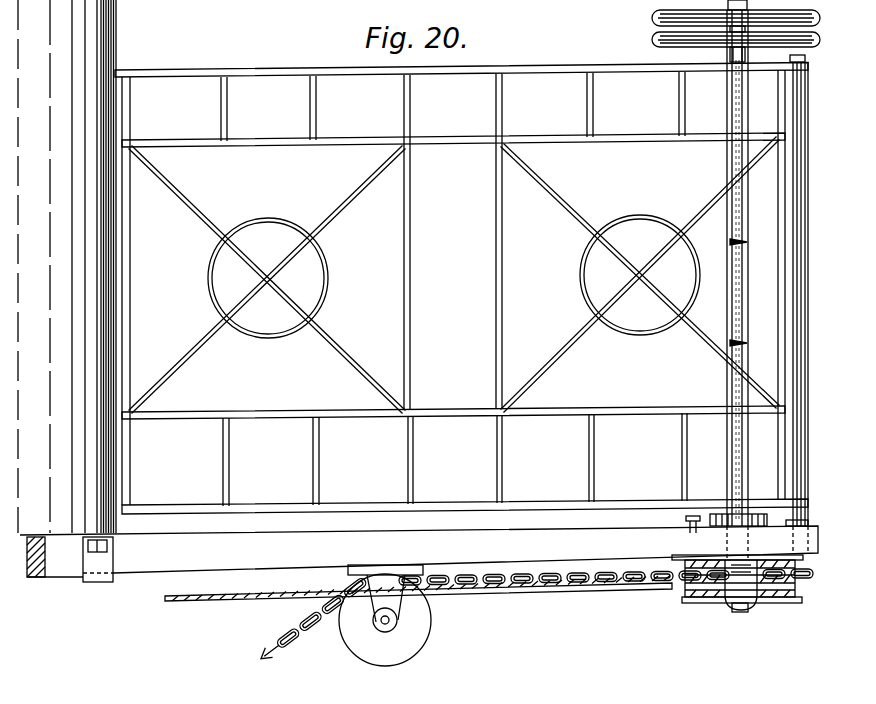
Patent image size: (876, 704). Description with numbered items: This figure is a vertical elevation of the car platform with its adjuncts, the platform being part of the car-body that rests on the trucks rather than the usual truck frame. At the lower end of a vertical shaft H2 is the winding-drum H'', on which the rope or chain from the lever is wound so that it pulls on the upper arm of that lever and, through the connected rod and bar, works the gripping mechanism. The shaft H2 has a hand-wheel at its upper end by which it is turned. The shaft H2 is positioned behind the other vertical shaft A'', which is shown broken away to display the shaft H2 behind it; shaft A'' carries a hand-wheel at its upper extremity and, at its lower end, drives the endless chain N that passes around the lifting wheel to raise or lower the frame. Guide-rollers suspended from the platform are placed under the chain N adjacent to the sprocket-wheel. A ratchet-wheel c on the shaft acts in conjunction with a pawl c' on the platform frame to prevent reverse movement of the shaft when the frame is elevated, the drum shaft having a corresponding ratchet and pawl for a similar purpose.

The end post A''' is at (763, 285).
The vertical shaft A'' is at (751, 304).
The vertical shaft H2 is at (742, 297).
The pawl c' is at (677, 521).
The ratchet-wheel c is at (790, 517).
The caster plate stack Q' is at (754, 577).
The winding-drum H'' is at (719, 596).
The endless chain N is at (535, 620).